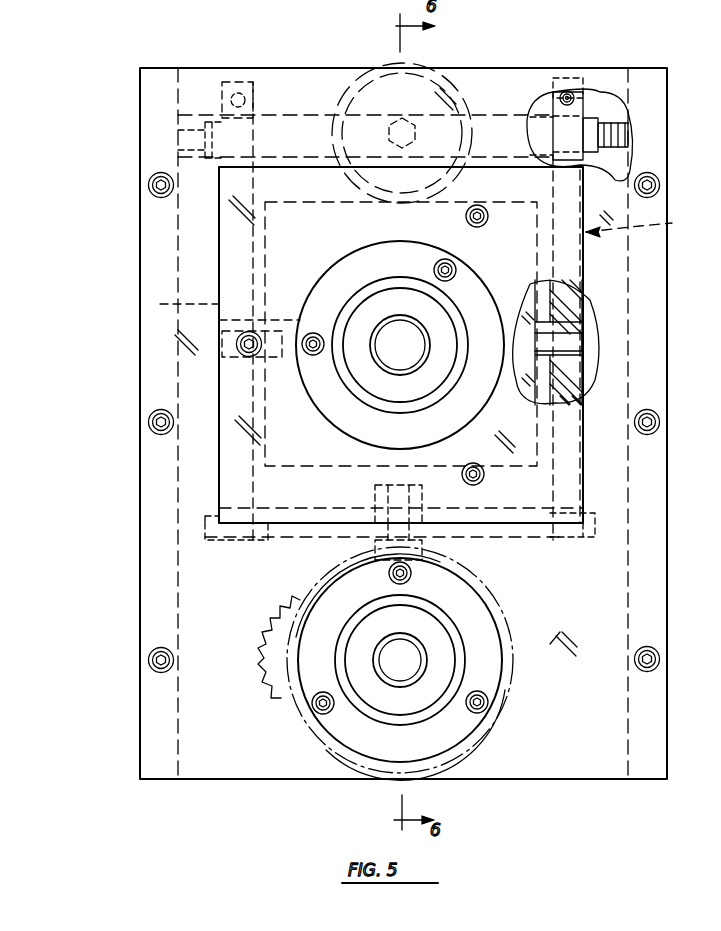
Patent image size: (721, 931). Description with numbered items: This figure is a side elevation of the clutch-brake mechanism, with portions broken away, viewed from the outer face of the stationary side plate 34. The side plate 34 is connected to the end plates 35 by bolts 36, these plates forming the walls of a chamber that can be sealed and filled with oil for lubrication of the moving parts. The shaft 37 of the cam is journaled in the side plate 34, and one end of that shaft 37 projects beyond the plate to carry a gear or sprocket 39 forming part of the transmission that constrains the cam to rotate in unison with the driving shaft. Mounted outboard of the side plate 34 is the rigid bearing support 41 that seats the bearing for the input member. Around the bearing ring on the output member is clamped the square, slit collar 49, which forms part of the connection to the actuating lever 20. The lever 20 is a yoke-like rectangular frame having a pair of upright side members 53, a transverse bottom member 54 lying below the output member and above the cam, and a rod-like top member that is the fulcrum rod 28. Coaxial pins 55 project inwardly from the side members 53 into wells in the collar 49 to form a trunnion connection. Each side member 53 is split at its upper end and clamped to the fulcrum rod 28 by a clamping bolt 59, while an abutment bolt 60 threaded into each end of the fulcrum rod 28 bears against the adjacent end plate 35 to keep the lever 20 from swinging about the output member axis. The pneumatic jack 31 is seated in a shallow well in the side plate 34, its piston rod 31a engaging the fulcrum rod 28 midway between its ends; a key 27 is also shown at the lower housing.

The actuating lever 20 is at (643, 224).
The key 27 is at (368, 553).
The fulcrum rod 28 is at (540, 115).
The pneumatic jack 31 is at (440, 90).
The piston rod 31a is at (400, 118).
The side plate 34 is at (572, 656).
The end plate 35 is at (178, 770).
The bolt 36 is at (148, 185).
The shaft 37 is at (385, 664).
The gear or sprocket 39 is at (300, 622).
The bearing support 41 is at (218, 262).
The collar 49 is at (537, 430).
The side member 53 is at (638, 280).
The bottom member 54 is at (520, 537).
The pin 55 is at (278, 331).
The clamping bolt 59 is at (567, 92).
The abutment bolt 60 is at (200, 130).